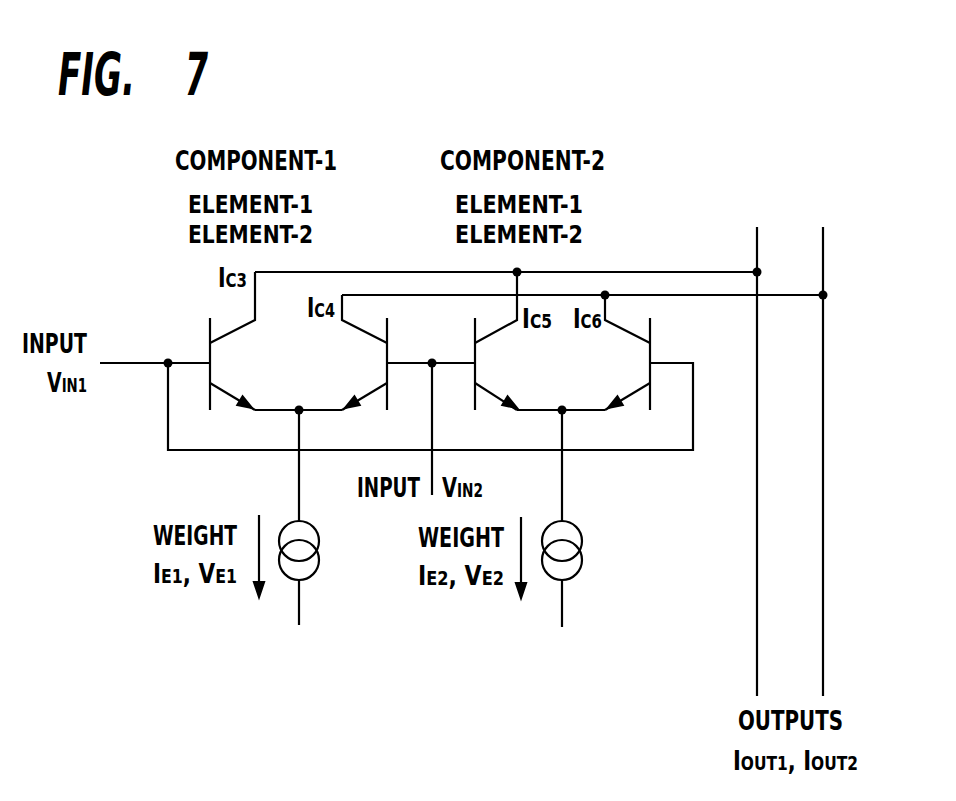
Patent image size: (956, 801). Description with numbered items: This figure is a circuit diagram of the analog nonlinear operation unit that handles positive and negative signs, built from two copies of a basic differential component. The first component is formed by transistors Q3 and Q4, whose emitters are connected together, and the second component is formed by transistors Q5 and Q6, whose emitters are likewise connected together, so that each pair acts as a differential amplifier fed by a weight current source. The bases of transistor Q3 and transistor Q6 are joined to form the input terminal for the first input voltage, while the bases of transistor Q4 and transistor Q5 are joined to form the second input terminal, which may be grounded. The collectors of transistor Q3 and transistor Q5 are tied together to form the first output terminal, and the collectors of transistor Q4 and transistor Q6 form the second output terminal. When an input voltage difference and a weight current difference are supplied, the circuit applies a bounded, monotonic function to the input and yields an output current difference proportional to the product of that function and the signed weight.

The transistor Q3 is at (234, 341).
The transistor Q4 is at (363, 352).
The transistor Q5 is at (498, 341).
The transistor Q6 is at (626, 352).